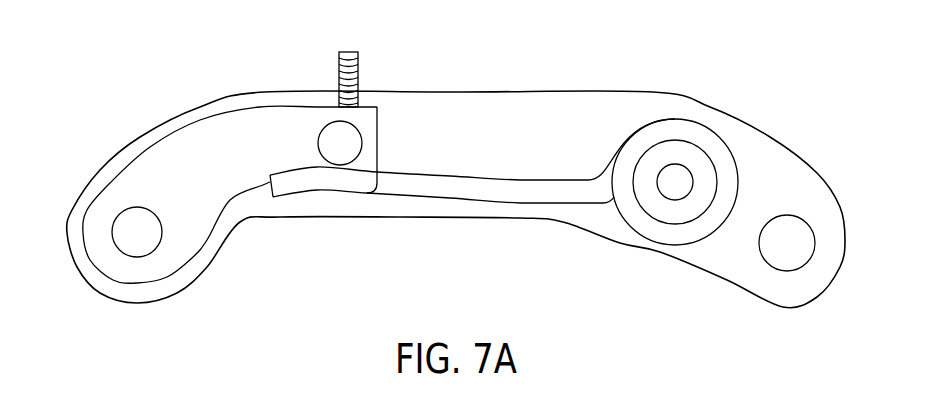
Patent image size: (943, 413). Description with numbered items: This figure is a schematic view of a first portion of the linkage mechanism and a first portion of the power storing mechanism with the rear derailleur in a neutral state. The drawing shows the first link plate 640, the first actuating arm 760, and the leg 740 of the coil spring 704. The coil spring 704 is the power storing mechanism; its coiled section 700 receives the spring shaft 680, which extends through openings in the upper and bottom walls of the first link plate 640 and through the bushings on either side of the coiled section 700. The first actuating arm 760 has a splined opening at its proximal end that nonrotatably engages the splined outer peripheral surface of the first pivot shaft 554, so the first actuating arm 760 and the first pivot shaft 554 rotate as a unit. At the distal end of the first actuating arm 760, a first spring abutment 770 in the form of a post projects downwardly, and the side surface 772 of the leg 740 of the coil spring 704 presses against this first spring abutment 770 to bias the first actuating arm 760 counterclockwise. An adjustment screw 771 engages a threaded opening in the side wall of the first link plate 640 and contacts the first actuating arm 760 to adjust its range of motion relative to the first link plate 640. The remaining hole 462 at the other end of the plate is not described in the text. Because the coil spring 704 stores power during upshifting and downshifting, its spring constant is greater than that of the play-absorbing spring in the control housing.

The first link plate 640 is at (557, 90).
The first actuating arm 760 is at (190, 140).
The first pivot shaft 554 is at (127, 228).
The side surface 772 is at (370, 162).
The first spring abutment 770 is at (337, 133).
The adjustment screw 771 is at (348, 57).
The leg 740 is at (478, 190).
The coiled section 700 is at (730, 182).
The spring shaft 680 is at (675, 173).
The coil spring 704 is at (738, 143).
The mounting hole 462 is at (802, 245).